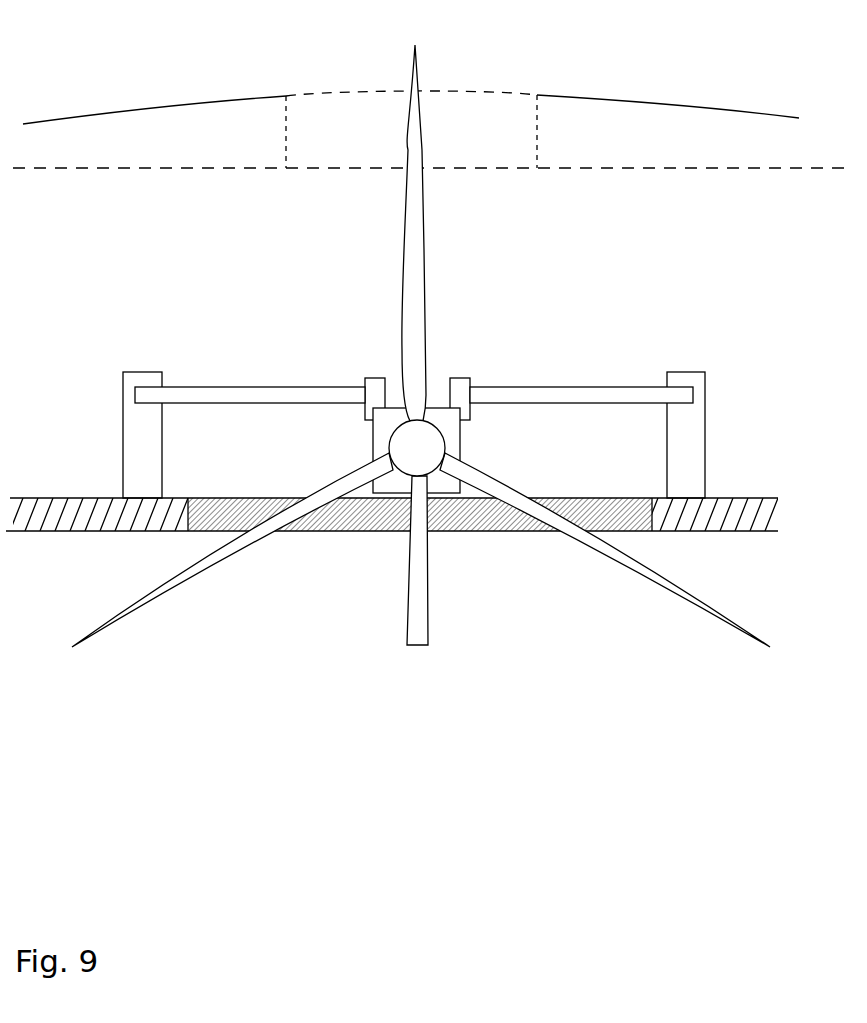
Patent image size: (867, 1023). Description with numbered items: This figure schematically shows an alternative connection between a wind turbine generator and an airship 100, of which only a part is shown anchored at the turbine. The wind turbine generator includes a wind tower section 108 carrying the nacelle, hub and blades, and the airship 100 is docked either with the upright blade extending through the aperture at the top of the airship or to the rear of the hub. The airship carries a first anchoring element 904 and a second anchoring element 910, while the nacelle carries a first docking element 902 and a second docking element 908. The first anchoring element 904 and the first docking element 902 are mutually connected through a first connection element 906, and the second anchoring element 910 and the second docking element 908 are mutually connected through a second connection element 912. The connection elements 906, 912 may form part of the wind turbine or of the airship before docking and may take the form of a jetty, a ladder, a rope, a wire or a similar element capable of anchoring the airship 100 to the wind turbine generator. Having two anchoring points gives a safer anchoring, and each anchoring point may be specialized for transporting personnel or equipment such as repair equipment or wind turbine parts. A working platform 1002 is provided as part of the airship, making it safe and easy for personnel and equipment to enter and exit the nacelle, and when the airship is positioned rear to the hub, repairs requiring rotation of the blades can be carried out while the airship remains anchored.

The airship 100 is at (691, 137).
The wind tower section 108 is at (420, 610).
The first docking element 902 is at (455, 380).
The first anchoring element 904 is at (698, 440).
The first connection element 906 is at (577, 398).
The second docking element 908 is at (367, 382).
The second anchoring element 910 is at (135, 372).
The second connection element 912 is at (252, 400).
The working platform 1002 is at (82, 518).